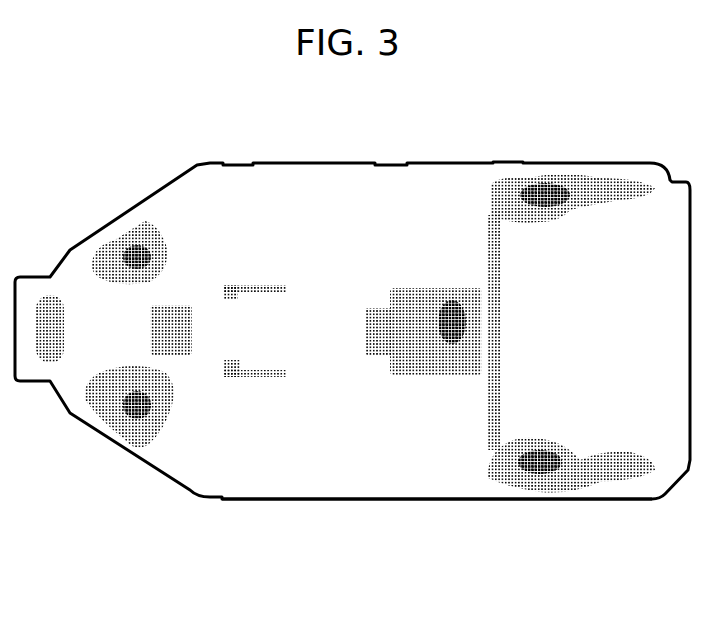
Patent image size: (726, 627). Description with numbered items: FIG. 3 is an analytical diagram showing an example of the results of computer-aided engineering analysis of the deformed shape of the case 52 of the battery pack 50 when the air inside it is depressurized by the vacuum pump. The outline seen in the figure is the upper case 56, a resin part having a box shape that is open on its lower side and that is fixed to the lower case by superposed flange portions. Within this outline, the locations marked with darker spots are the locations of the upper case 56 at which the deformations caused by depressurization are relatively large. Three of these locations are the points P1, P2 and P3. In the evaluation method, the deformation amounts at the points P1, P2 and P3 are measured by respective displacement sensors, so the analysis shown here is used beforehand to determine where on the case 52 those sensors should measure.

The point P1 is at (137, 257).
The point P2 is at (137, 398).
The point P3 is at (450, 345).
The upper case 56 is at (310, 483).
The case 52 is at (428, 500).
The battery pack 50 is at (352, 385).